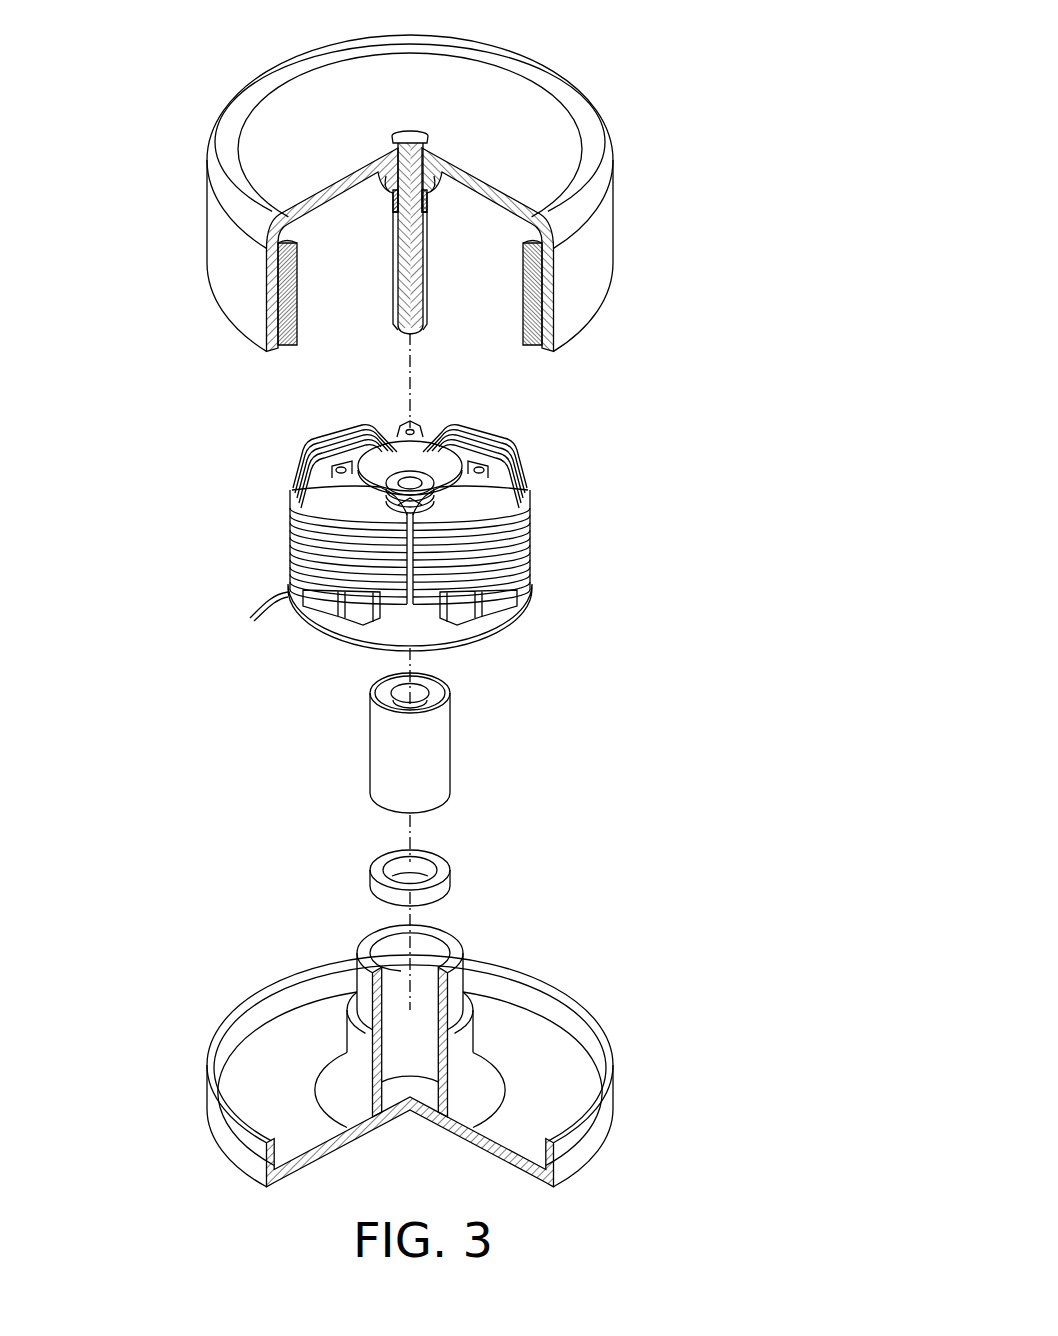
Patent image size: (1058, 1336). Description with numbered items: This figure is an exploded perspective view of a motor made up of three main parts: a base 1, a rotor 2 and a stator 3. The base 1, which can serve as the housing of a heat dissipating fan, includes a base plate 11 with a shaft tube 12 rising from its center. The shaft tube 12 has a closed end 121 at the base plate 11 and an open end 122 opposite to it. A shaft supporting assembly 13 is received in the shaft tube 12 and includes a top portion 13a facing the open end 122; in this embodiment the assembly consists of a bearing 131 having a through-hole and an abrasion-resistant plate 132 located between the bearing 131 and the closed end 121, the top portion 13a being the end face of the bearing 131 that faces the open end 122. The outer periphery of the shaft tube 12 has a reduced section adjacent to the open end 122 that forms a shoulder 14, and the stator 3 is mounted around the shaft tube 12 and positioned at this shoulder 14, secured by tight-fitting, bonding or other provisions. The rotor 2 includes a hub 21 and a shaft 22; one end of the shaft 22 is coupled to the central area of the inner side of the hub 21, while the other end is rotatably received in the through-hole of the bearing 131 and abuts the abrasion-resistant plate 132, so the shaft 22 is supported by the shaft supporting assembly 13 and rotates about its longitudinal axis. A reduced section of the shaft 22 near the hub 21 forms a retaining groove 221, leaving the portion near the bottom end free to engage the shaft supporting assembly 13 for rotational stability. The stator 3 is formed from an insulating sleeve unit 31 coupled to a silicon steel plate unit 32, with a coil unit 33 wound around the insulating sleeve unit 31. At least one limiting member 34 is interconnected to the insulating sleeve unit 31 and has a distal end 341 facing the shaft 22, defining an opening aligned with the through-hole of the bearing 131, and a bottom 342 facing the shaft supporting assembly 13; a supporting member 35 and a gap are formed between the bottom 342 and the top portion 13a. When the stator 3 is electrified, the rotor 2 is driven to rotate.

The base 1 is at (449, 1015).
The base plate 11 is at (563, 1073).
The shaft tube 12 is at (467, 1042).
The closed end 121 is at (416, 1133).
The open end 122 is at (382, 950).
The shaft supporting assembly 13 is at (500, 773).
The top portion 13a is at (436, 688).
The bearing 131 is at (470, 726).
The abrasion-resistant plate 132 is at (470, 845).
The shoulder 14 is at (468, 995).
The rotor 2 is at (461, 180).
The hub 21 is at (510, 87).
The shaft 22 is at (425, 283).
The retaining groove 221 is at (428, 202).
The stator 3 is at (468, 502).
The insulating sleeve unit 31 is at (500, 437).
The silicon steel plate unit 32 is at (530, 532).
The coil unit 33 is at (490, 486).
The limiting member 34 is at (385, 462).
The distal end 341 is at (400, 475).
The bottom 342 is at (387, 495).
The supporting member 35 is at (360, 492).